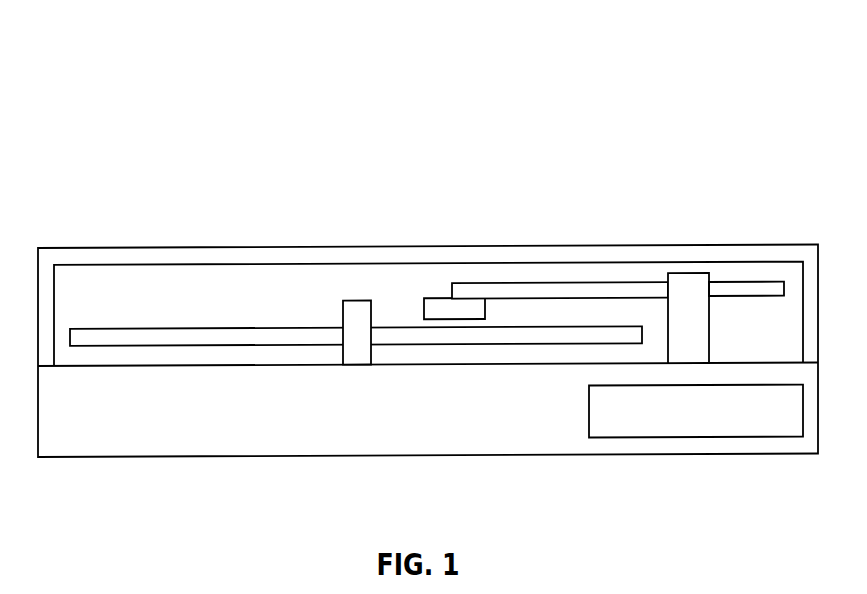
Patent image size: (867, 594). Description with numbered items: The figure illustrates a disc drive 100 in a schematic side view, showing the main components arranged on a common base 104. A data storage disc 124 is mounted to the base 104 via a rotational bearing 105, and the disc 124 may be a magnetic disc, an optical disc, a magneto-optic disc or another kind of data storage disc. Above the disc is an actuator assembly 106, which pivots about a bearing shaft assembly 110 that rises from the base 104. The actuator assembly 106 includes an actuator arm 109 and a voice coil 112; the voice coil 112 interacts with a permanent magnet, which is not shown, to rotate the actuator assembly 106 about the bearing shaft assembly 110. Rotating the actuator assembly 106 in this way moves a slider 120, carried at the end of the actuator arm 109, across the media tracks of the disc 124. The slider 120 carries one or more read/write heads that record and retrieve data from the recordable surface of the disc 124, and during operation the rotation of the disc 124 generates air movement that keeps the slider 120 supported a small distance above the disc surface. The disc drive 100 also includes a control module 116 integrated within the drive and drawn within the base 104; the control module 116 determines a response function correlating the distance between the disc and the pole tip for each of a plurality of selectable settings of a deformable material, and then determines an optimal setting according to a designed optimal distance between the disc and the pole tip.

The disc drive 100 is at (159, 106).
The base 104 is at (102, 431).
The rotational bearing 105 is at (352, 302).
The actuator assembly 106 is at (673, 190).
The actuator arm 109 is at (602, 284).
The bearing shaft assembly 110 is at (690, 276).
The voice coil 112 is at (727, 285).
The control module 116 is at (687, 429).
The slider 120 is at (437, 300).
The data storage disc 124 is at (118, 329).